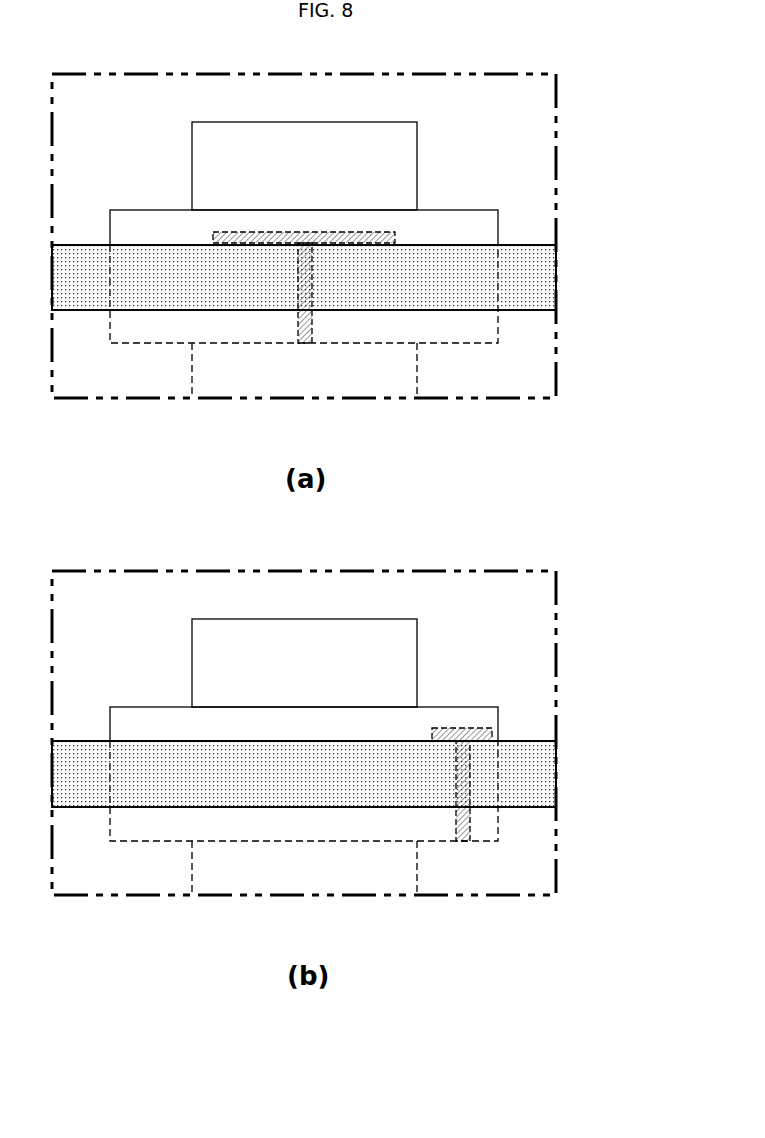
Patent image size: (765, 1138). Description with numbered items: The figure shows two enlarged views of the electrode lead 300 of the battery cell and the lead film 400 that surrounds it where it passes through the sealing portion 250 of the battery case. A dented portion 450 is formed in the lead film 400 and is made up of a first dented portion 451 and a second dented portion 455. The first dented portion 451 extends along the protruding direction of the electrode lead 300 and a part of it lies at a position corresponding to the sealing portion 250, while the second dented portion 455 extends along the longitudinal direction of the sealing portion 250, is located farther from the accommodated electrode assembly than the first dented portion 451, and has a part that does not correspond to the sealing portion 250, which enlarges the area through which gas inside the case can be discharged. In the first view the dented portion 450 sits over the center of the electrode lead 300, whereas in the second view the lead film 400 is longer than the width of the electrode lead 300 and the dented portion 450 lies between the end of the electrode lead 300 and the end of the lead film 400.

The electrode lead 300 is at (398, 165).
The lead film 400 is at (487, 227).
The sealing portion 250 is at (540, 272).
The dented portion 450 is at (361, 605).
The first dented portion 451 is at (318, 318).
The second dented portion 455 is at (380, 238).